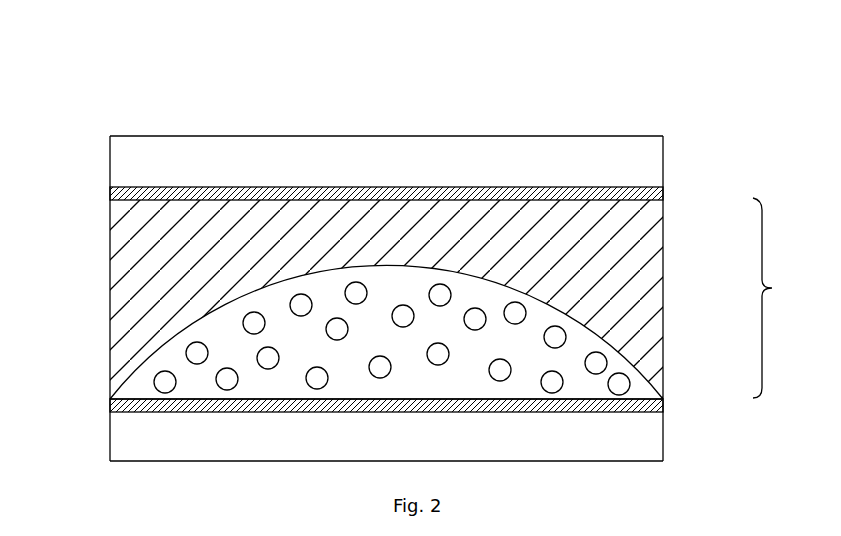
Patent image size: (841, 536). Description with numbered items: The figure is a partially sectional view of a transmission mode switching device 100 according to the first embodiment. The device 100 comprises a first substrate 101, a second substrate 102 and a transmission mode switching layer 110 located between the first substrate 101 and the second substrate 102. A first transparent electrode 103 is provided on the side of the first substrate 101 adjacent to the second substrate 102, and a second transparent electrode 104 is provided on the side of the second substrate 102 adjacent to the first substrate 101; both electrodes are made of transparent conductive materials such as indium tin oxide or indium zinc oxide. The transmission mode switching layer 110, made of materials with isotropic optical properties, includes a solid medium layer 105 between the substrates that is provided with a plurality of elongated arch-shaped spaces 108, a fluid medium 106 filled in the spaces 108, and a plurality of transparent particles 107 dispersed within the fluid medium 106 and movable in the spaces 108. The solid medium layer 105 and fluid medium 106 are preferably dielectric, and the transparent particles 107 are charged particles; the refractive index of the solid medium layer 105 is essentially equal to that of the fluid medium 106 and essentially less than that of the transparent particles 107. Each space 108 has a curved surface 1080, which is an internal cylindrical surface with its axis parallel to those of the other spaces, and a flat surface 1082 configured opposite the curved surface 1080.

The transmission mode switching device 100 is at (567, 67).
The first substrate 101 is at (642, 163).
The second substrate 102 is at (647, 445).
The first transparent electrode 103 is at (660, 192).
The second transparent electrode 104 is at (657, 405).
The solid medium layer 105 is at (637, 268).
The fluid medium 106 is at (450, 338).
The transparent particles 107 is at (596, 363).
The space 108 is at (382, 319).
The curved surface 1080 is at (228, 302).
The flat surface 1082 is at (163, 395).
The transmission mode switching layer 110 is at (787, 298).